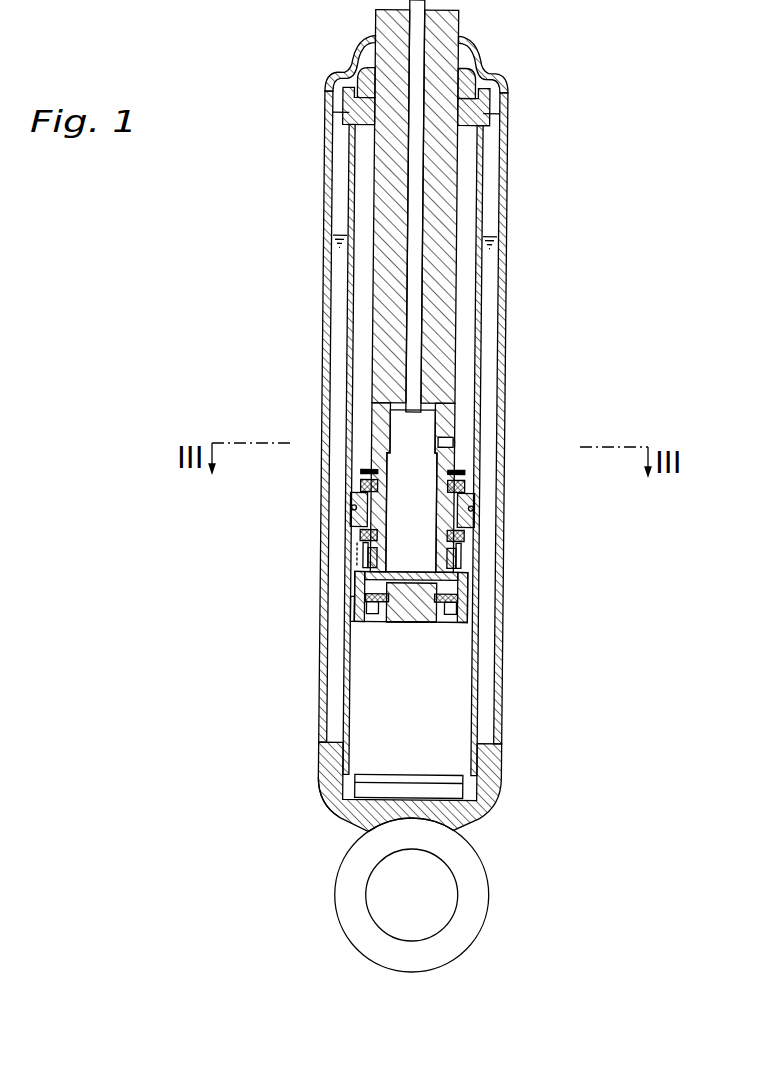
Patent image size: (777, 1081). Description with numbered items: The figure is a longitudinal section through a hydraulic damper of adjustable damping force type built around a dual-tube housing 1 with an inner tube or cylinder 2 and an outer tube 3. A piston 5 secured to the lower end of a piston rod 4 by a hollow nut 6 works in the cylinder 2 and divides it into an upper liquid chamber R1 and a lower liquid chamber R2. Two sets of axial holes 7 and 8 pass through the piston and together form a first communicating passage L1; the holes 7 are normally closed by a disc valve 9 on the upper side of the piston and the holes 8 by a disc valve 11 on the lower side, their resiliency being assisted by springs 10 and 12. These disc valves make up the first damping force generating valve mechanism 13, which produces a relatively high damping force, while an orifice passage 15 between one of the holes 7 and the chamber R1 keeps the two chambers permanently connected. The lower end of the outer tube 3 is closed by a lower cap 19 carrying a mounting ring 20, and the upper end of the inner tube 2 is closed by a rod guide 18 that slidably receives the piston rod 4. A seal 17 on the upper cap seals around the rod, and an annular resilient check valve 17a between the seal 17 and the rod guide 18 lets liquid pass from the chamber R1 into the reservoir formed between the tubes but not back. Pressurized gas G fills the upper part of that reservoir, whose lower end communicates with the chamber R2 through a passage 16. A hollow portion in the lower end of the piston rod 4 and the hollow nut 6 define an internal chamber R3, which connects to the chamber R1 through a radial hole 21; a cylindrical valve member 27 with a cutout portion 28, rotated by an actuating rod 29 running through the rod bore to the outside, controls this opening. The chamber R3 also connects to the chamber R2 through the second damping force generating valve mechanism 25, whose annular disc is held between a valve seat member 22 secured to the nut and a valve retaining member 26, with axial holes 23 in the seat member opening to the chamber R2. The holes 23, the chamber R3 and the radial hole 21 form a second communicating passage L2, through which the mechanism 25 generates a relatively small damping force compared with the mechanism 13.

The dual-tube housing 1 is at (322, 224).
The inner tube or cylinder 2 is at (481, 193).
The outer tube 3 is at (505, 228).
The piston rod 4 is at (448, 292).
The piston 5 is at (470, 524).
The hollow nut 6 is at (358, 588).
The holes 7 is at (437, 492).
The holes 8 is at (391, 491).
The damping force generating disc valve 9 is at (358, 487).
The spring 10 is at (360, 478).
The damping force generating disc valve 11 is at (360, 535).
The spring 12 is at (348, 556).
The first damping force generating valve mechanism 13 is at (273, 487).
The orifice passage 15 is at (470, 503).
The passage 16 is at (497, 806).
The seal 17 is at (356, 52).
The annular resilient check valve 17a is at (347, 68).
The rod guide 18 is at (328, 110).
The lower cap 19 is at (343, 808).
The mounting ring 20 is at (478, 877).
The radial hole 21 is at (456, 447).
The valve seat member 22 is at (430, 624).
The axial holes 23 is at (378, 624).
The second damping force generating valve mechanism 25 is at (347, 597).
The valve retaining member 26 is at (416, 626).
The cylindrical valve member 27 is at (448, 410).
The cutout portion 28 is at (434, 442).
The actuating rod 29 is at (410, 300).
The pressurized gas G is at (340, 176).
The upper liquid chamber R1 is at (357, 334).
The lower liquid chamber R2 is at (358, 707).
The internal chamber R3 is at (465, 562).
The first communicating passage L1 is at (414, 547).
The second communicating passage L2 is at (617, 545).